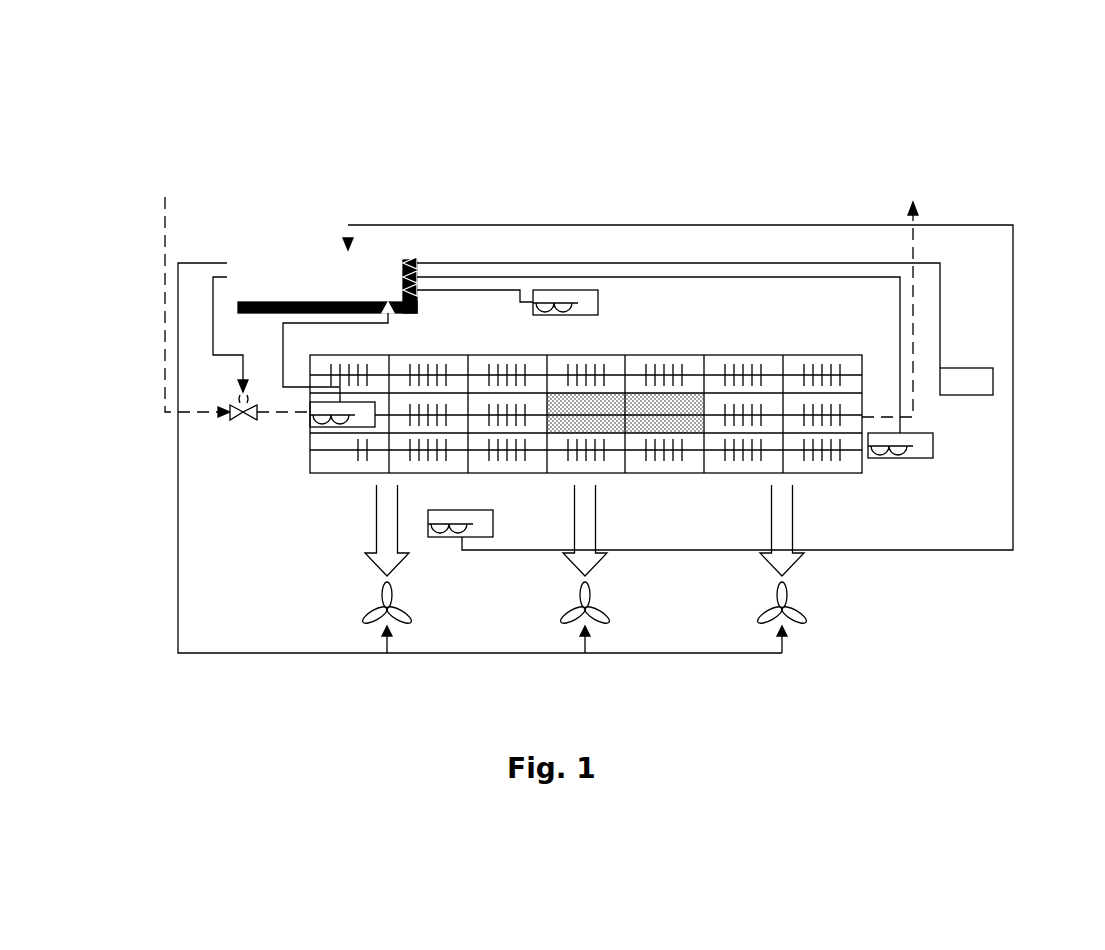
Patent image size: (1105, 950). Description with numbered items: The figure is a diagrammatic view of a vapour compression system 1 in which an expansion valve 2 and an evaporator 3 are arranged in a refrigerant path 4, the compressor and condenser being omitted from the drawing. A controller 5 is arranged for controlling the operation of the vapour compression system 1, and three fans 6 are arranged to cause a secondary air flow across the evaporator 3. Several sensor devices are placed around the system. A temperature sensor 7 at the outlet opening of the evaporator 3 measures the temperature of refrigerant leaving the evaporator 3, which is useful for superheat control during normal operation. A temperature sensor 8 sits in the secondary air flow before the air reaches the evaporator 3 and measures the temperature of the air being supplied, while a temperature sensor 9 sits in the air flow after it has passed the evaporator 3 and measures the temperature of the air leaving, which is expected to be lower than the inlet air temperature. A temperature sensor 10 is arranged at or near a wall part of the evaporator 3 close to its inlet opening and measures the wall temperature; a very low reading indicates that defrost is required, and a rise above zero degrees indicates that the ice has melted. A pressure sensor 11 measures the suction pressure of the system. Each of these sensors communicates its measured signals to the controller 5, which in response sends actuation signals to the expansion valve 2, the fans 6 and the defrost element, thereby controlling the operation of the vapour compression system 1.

The vapour compression system 1 is at (415, 132).
The expansion valve 2 is at (236, 412).
The evaporator 3 is at (793, 453).
The refrigerant path 4 is at (165, 257).
The controller 5 is at (323, 265).
The fans 6 is at (382, 617).
The temperature sensor 7 is at (913, 438).
The temperature sensor 8 is at (575, 303).
The temperature sensor 9 is at (443, 530).
The temperature sensor 10 is at (330, 418).
The pressure sensor 11 is at (980, 373).